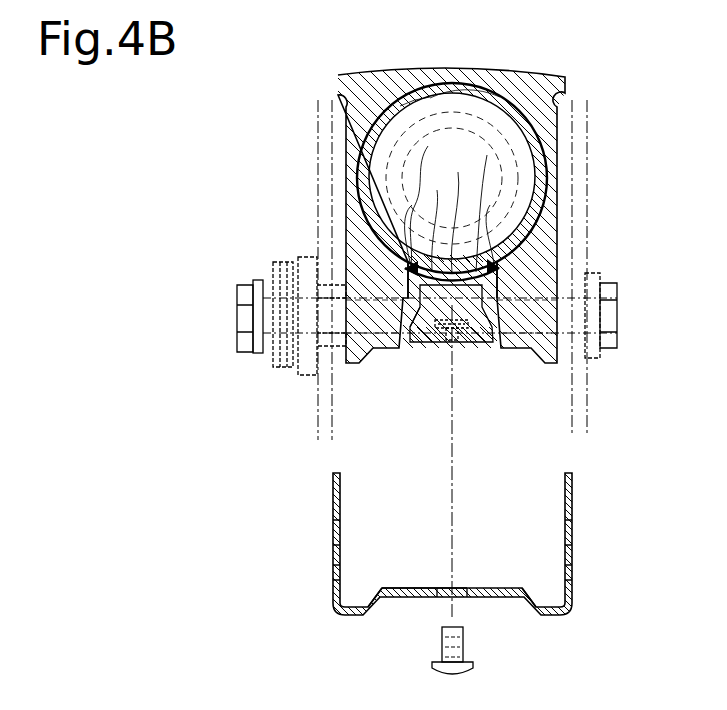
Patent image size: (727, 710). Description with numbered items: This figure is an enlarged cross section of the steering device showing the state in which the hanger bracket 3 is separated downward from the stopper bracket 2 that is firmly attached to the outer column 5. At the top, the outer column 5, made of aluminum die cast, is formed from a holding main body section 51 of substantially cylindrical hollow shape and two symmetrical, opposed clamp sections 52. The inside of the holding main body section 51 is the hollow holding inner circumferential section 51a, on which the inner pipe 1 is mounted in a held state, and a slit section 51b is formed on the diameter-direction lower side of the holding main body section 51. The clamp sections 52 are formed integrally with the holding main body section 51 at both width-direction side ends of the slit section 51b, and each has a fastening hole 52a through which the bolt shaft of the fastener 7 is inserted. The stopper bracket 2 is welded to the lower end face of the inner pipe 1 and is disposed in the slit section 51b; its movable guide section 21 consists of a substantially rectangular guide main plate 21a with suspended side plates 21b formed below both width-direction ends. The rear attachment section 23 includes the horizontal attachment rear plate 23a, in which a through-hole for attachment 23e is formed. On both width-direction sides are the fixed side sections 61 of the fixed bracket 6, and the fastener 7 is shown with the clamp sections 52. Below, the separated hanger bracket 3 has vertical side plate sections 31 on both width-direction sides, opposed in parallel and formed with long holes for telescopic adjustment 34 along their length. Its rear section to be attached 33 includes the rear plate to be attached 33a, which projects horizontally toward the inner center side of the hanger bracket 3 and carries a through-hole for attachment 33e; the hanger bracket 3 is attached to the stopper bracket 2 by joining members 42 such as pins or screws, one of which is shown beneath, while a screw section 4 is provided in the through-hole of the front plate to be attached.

The inner pipe 1 is at (494, 98).
The stopper bracket 2 is at (452, 192).
The hanger bracket 3 is at (582, 505).
The screw section 4 is at (456, 342).
The outer column 5 is at (576, 82).
The fixed bracket 6 is at (602, 422).
The fastener 7 is at (233, 347).
The movable guide section 21 is at (452, 200).
The guide main plate 21a is at (452, 224).
The suspended side plates 21b is at (454, 223).
The attachment section 23 is at (505, 312).
The attachment rear plate 23a is at (420, 336).
The through-hole for attachment 23e is at (440, 336).
The side plate sections 31 is at (318, 287).
The section to be attached 33 is at (408, 598).
The rear plate to be attached 33a is at (405, 588).
The through-hole for attachment 33e is at (460, 588).
The long holes for telescopic adjustment 34 is at (335, 319).
The joining members 42 is at (474, 668).
The holding main body section 51 is at (568, 145).
The holding inner circumferential section 51a is at (412, 100).
The slit section 51b is at (434, 196).
The clamp sections 52 is at (375, 300).
The fastening holes 52a is at (380, 270).
The fixed side sections 61 is at (318, 140).